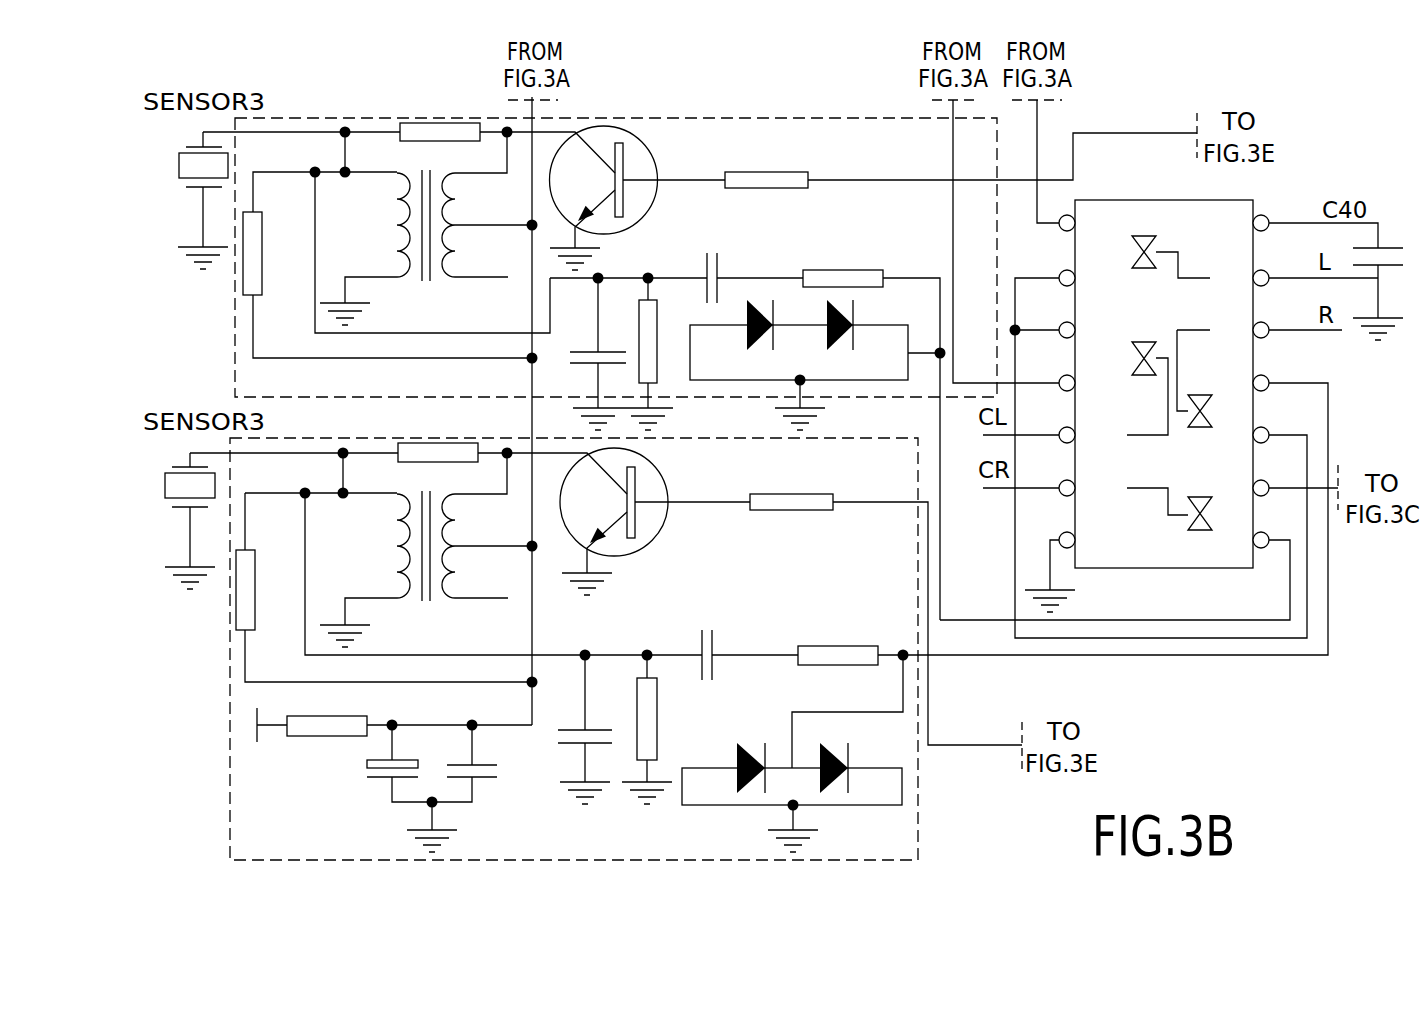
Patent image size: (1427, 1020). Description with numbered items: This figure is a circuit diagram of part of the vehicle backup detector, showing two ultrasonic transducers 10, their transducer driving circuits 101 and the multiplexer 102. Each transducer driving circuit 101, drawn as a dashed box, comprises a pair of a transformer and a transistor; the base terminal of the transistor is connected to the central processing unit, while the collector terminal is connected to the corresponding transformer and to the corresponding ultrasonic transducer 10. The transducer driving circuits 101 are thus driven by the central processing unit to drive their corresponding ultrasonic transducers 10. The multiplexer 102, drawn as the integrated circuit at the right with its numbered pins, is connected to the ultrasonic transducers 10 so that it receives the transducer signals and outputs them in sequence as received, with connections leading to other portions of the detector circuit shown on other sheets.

The ultrasonic transducer 10 is at (179, 360).
The transducer driving circuit 101 is at (380, 116).
The multiplexer 102 is at (1243, 198).